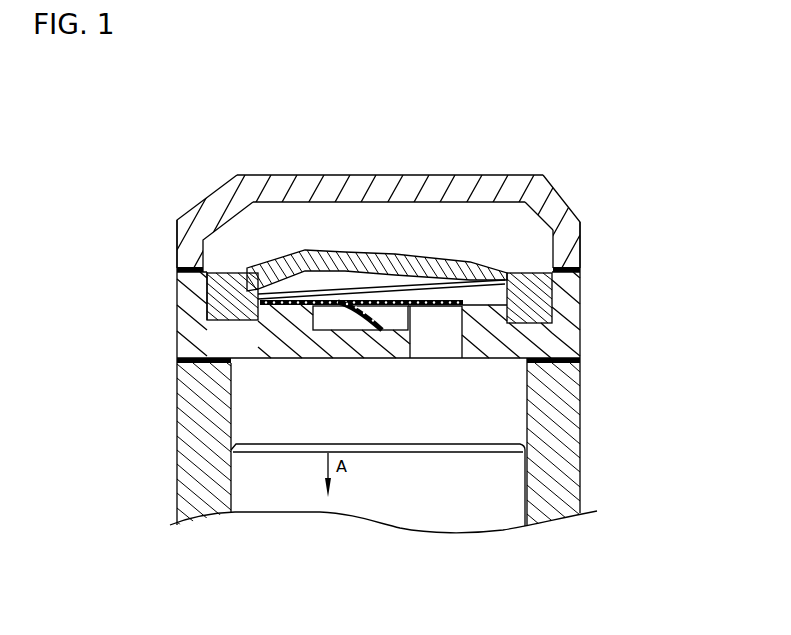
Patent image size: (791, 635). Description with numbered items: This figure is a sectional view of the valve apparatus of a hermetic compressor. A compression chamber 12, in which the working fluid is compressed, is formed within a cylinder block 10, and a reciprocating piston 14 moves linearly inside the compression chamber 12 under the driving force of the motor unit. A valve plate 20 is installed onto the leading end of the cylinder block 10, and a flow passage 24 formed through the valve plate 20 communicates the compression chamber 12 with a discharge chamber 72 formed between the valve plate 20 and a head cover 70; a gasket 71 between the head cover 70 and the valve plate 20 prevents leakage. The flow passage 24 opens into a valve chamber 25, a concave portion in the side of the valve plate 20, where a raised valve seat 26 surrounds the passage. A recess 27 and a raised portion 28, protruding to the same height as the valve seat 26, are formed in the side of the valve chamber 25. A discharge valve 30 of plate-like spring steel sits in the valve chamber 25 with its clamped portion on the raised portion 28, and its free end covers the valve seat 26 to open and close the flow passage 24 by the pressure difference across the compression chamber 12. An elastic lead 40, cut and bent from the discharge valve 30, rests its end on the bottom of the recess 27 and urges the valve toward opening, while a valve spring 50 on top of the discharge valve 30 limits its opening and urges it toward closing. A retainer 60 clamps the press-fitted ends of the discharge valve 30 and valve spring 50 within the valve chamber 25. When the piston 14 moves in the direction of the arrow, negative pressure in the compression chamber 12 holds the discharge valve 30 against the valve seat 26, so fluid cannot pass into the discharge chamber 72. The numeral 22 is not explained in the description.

The cylinder block 10 is at (580, 481).
The compression chamber 12 is at (580, 446).
The piston 14 is at (488, 511).
The valve plate 20 is at (580, 347).
The lower seal 22 is at (580, 363).
The flow passage 24 is at (435, 340).
The valve chamber 25 is at (555, 328).
The valve seat 26 is at (507, 423).
The recess 27 is at (300, 303).
The raised portion 28 is at (255, 296).
The discharge valve 30 is at (560, 291).
The elastic lead 40 is at (340, 325).
The valve spring 50 is at (400, 283).
The retainer 60 is at (560, 256).
The head cover 70 is at (185, 232).
The gasket 71 is at (177, 272).
The discharge chamber 72 is at (250, 220).